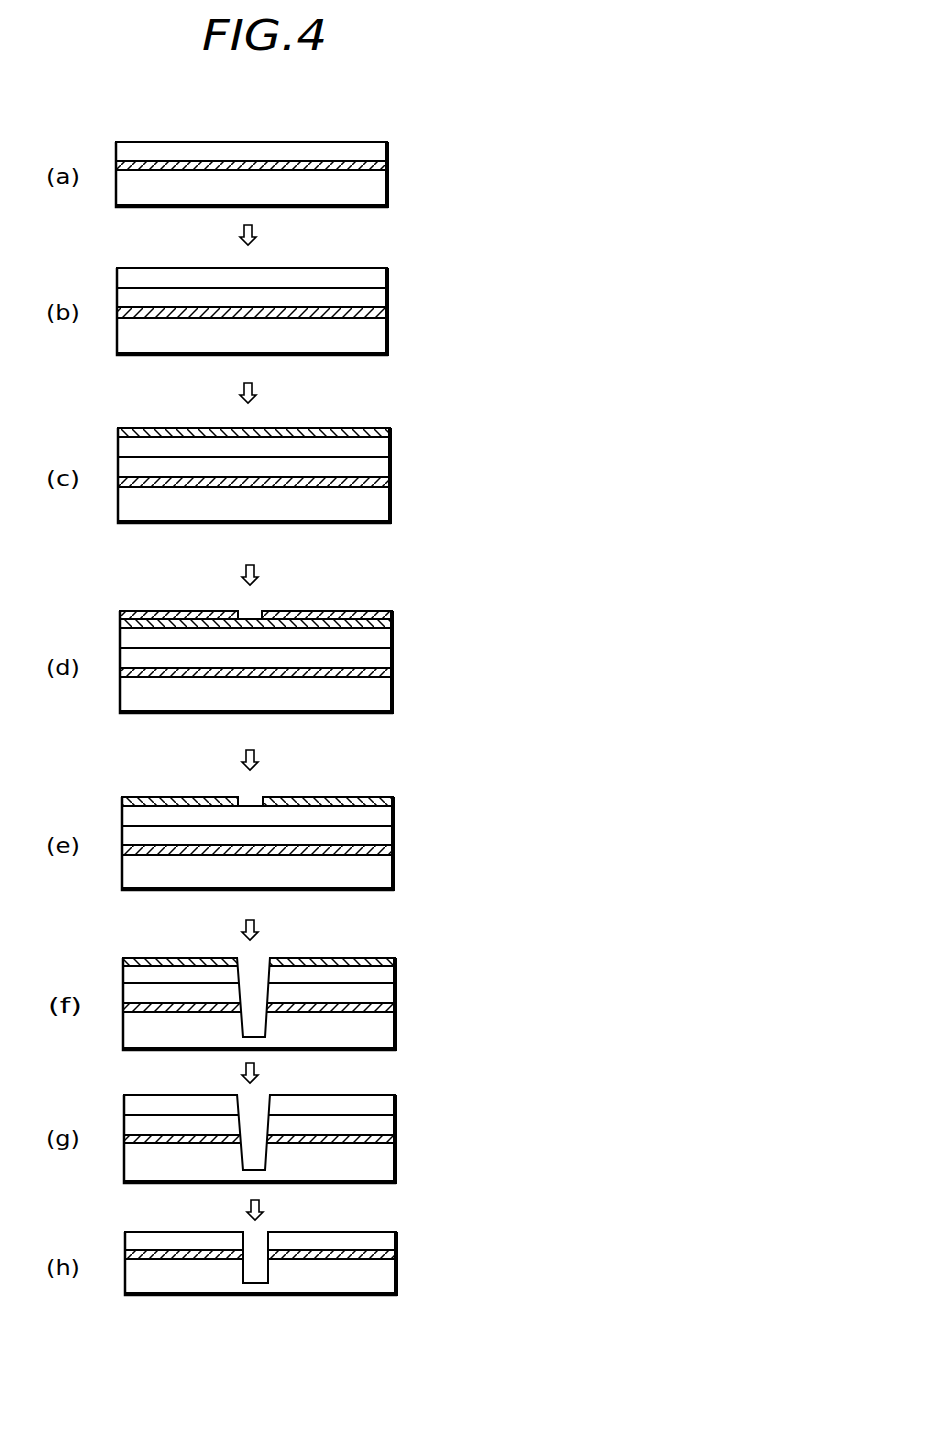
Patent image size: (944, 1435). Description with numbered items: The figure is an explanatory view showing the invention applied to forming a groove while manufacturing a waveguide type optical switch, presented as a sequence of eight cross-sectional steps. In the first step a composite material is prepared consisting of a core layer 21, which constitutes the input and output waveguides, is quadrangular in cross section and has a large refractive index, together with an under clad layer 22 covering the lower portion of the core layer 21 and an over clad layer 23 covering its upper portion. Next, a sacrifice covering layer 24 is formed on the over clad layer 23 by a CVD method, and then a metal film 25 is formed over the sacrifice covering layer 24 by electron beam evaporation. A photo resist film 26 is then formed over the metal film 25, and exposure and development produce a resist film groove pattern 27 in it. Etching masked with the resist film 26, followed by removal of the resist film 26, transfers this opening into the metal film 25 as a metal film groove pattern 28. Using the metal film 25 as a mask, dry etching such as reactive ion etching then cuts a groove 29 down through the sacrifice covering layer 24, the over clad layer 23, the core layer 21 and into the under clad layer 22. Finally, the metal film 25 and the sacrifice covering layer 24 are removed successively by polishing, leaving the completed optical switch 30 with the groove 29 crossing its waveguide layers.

The core layer 21 is at (396, 1255).
The under clad layer 22 is at (450, 1272).
The over clad layer 23 is at (396, 1235).
The sacrifice covering layer 24 is at (395, 1100).
The metal film 25 is at (395, 958).
The photo resist film 26 is at (392, 610).
The resist film groove pattern 27 is at (250, 612).
The metal film groove pattern 28 is at (250, 798).
The groove 29 is at (450, 1298).
The optical switch 30 is at (498, 1308).